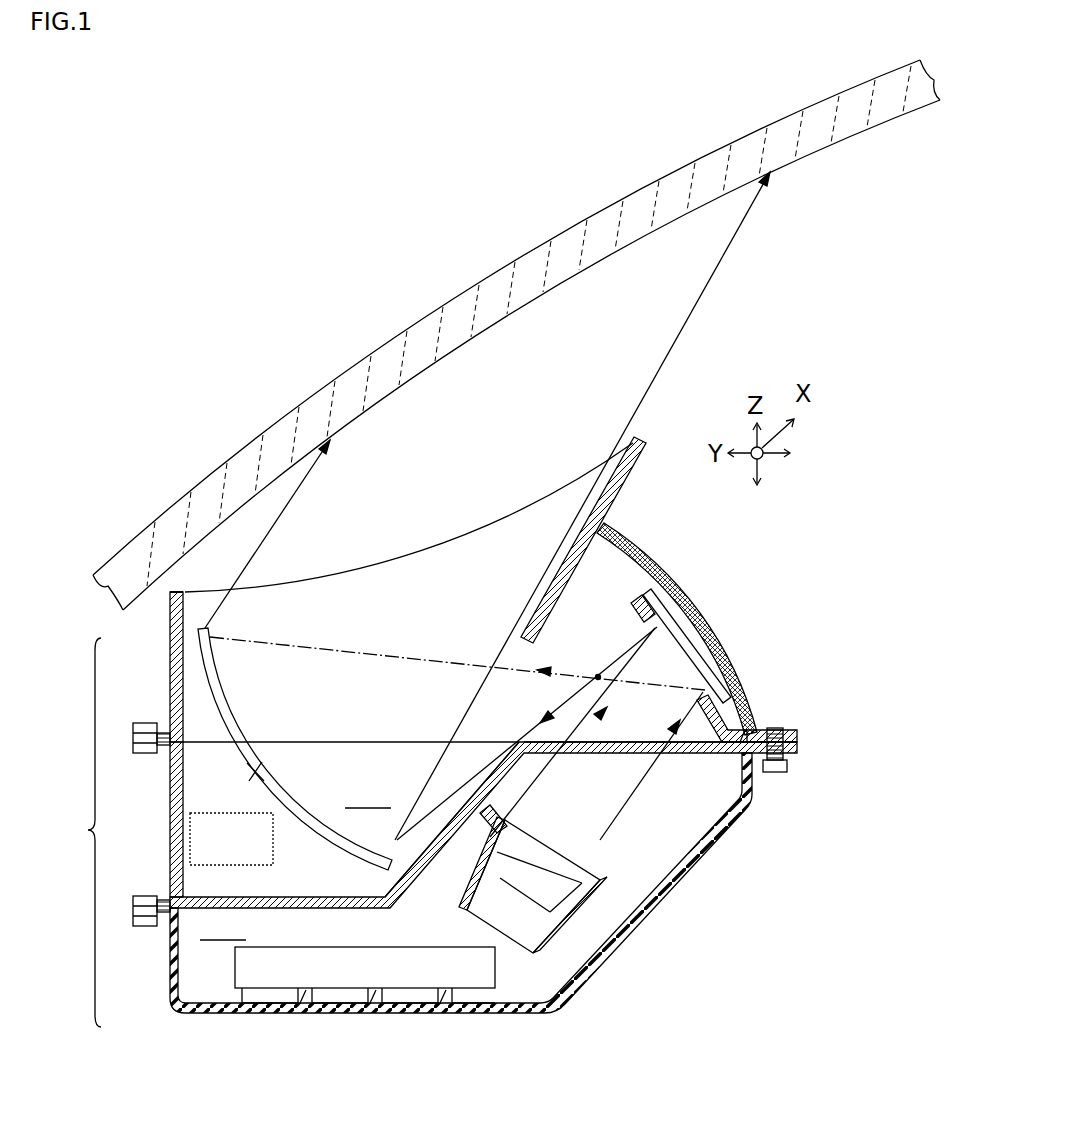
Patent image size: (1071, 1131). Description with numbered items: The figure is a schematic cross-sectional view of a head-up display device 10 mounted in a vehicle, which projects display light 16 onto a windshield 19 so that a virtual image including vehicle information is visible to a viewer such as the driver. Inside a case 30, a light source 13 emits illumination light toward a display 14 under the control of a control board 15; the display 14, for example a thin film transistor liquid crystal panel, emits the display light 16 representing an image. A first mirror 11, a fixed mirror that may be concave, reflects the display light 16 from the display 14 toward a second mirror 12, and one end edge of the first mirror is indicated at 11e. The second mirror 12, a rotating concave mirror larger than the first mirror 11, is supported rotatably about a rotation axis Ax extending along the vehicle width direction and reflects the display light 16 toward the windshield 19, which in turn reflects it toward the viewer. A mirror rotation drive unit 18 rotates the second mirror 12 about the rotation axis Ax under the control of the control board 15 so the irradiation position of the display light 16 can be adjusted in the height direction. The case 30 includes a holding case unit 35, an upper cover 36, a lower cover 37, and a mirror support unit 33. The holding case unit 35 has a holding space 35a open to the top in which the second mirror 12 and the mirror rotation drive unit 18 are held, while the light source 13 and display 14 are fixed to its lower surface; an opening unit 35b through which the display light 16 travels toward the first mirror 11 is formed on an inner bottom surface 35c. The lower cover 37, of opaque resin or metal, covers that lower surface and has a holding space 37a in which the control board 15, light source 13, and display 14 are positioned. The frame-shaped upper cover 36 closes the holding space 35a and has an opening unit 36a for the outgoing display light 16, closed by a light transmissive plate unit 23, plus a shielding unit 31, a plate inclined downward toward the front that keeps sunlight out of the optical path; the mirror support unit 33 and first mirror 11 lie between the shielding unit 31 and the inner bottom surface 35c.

The head-up display device 10 is at (640, 1023).
The first mirror 11 is at (700, 640).
The end edge of reflecting mirror 11e is at (648, 620).
The second mirror 12 is at (262, 760).
The light source 13 is at (507, 913).
The display 14 is at (603, 893).
The control board 15 is at (417, 952).
The display light 16 is at (258, 556).
The mirror rotation drive unit 18 is at (231, 839).
The windshield 19 is at (358, 362).
The light transmissive plate unit 23 is at (381, 560).
The case 30 is at (85, 830).
The shielding unit 31 is at (556, 582).
The mirror support unit 33 is at (730, 730).
The holding case unit 35 is at (450, 792).
The holding space 35a is at (369, 794).
The opening unit 35b is at (668, 756).
The inner bottom surface 35c is at (513, 740).
The upper cover 36 is at (170, 662).
The opening unit 36a is at (190, 588).
The lower cover 37 is at (427, 889).
The holding space 37a is at (224, 926).
The rotation axis Ax is at (250, 777).